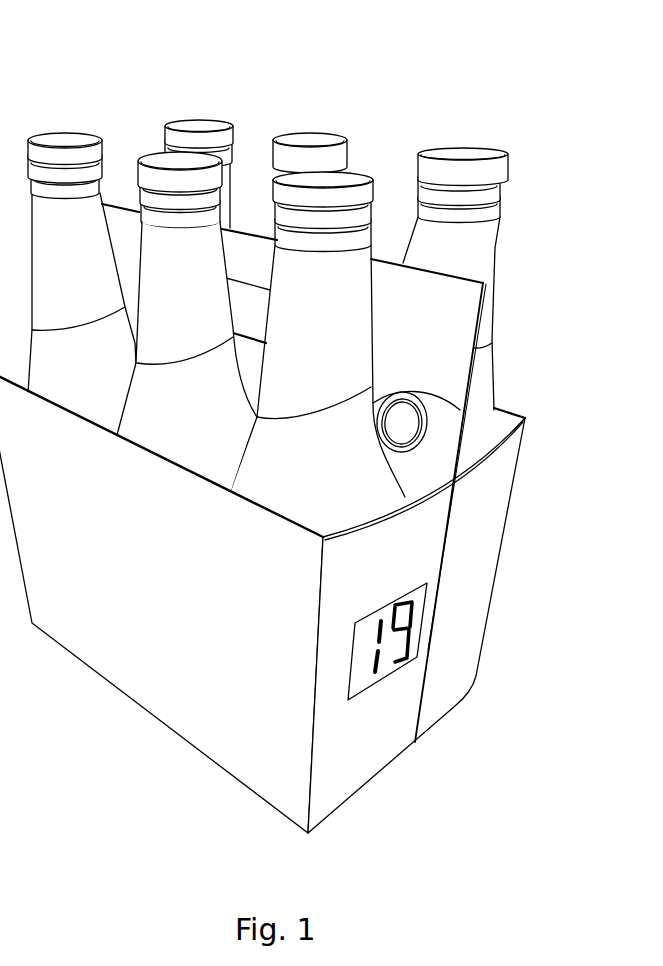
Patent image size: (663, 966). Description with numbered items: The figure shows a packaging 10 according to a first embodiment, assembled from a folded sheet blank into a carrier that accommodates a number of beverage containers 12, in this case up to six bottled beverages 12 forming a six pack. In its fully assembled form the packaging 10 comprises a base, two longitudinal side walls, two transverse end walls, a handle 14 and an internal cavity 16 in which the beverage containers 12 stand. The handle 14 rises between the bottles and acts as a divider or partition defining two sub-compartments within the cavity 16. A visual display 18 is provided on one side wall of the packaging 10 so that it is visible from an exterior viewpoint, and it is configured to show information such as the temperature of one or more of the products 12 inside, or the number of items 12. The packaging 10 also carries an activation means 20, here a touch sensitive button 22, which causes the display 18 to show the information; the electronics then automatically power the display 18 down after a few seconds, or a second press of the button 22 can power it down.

The packaging 10 is at (347, 777).
The beverage containers 12 is at (72, 137).
The handle 14 is at (253, 262).
The internal cavity 16 is at (210, 452).
The visual display 18 is at (358, 667).
The activation means 20 is at (400, 423).
The touch sensitive button 22 is at (440, 418).